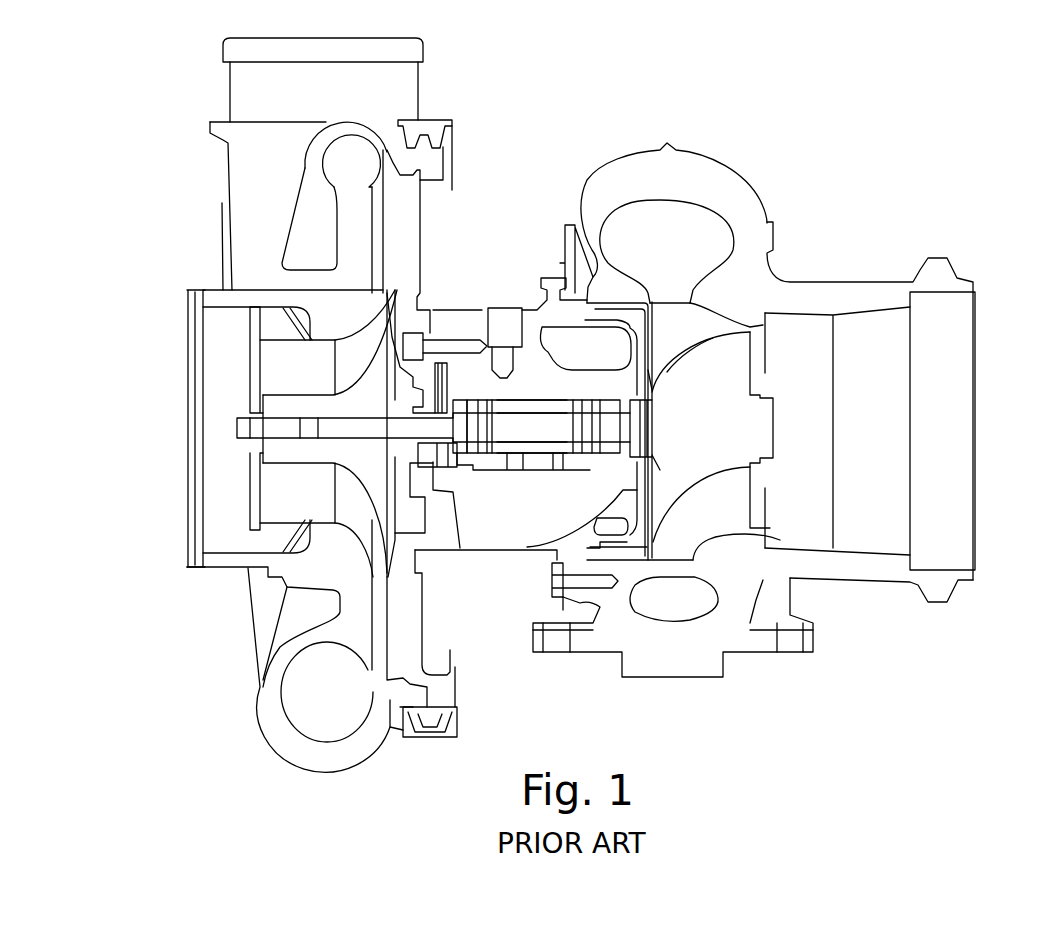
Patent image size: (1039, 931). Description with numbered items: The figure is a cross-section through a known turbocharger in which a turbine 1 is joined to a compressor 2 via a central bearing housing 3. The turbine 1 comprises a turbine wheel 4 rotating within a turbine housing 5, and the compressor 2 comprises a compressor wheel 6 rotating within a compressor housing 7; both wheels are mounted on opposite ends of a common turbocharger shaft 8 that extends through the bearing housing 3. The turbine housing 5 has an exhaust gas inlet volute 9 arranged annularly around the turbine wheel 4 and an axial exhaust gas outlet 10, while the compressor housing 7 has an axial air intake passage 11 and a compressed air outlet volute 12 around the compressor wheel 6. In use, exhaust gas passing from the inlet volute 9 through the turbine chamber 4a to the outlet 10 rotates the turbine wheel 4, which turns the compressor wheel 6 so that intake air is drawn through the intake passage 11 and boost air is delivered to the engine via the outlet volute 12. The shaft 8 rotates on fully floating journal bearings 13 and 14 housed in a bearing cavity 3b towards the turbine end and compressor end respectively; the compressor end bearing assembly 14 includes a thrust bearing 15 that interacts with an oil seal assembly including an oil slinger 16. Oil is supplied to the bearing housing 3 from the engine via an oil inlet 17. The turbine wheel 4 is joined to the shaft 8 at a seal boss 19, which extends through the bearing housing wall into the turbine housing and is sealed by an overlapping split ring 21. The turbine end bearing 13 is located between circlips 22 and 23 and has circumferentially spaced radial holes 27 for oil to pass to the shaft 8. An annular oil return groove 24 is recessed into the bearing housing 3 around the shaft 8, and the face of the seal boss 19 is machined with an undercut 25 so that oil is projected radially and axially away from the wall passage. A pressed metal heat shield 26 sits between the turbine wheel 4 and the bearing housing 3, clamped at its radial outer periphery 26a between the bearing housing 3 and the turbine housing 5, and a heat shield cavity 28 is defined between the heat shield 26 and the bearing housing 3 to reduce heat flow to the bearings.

The turbine 1 is at (893, 240).
The compressor 2 is at (213, 627).
The central bearing housing 3 is at (465, 310).
The bearing cavity 3b is at (510, 452).
The turbine wheel 4 is at (680, 480).
The turbine chamber 4a is at (757, 530).
The turbine housing 5 is at (890, 570).
The compressor wheel 6 is at (287, 453).
The compressor housing 7 is at (297, 277).
The turbocharger shaft 8 is at (527, 432).
The exhaust gas inlet volute 9 is at (680, 215).
The axial exhaust gas outlet 10 is at (890, 400).
The axial air intake passage 11 is at (207, 385).
The compressed air outlet volute 12 is at (365, 153).
The turbine end journal bearing 13 is at (582, 403).
The compressor end bearing assembly 14 is at (458, 403).
The thrust bearing 15 is at (432, 363).
The oil slinger 16 is at (427, 443).
The oil inlet 17 is at (505, 322).
The seal boss 19 is at (647, 428).
The split ring 21 is at (660, 462).
The circlip 22 is at (575, 452).
The circlip 23 is at (630, 555).
The annular oil return groove 24 is at (650, 350).
The undercut 25 is at (655, 522).
The heat shield 26 is at (653, 313).
The radial outer periphery 26a is at (575, 227).
The radial holes 27 is at (686, 357).
The heat shield cavity 28 is at (632, 300).